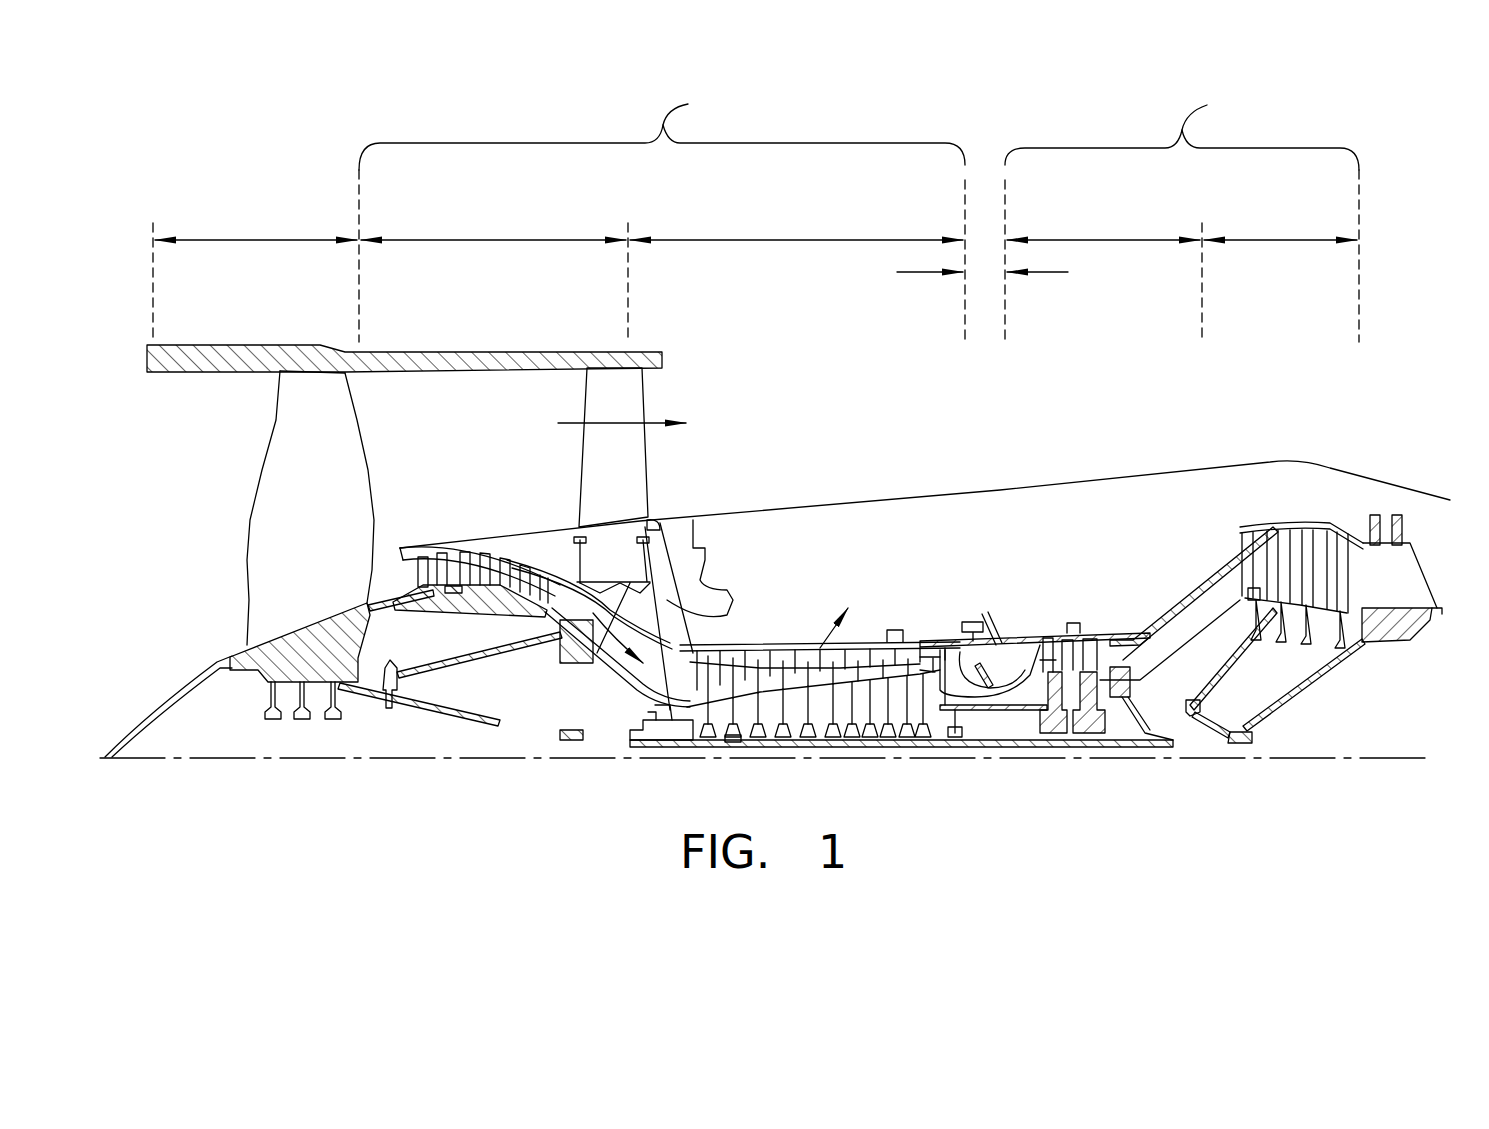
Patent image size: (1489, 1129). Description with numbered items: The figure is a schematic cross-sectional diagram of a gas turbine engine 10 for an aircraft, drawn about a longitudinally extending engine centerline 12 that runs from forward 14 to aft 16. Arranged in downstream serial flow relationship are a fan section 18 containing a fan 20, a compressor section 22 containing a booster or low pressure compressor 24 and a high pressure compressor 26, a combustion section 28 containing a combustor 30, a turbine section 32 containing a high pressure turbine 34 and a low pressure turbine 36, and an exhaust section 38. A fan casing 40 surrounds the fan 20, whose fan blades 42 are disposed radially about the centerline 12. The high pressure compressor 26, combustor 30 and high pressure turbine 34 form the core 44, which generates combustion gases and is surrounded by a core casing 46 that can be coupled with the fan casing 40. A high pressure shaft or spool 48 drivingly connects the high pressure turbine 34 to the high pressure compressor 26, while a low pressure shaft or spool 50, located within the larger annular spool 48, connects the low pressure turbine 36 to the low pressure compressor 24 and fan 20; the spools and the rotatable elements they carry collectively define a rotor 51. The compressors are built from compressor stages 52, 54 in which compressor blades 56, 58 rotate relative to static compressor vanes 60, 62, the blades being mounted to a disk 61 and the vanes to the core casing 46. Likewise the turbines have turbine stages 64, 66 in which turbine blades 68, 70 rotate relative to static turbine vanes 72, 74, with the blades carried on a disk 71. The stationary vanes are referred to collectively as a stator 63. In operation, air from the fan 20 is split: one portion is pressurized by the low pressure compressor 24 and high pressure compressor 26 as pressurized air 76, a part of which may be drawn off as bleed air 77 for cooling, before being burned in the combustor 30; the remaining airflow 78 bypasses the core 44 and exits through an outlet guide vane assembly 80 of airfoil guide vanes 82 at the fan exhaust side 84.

The gas turbine engine 10 is at (1378, 268).
The engine centerline 12 is at (233, 762).
The forward 14 is at (187, 480).
The aft 16 is at (1464, 577).
The fan section 18 is at (256, 240).
The fan 20 is at (228, 604).
The compressor section 22 is at (662, 129).
The low pressure compressor 24 is at (497, 240).
The high pressure compressor 26 is at (802, 240).
The combustion section 28 is at (897, 272).
The combustor 30 is at (1007, 653).
The turbine section 32 is at (1182, 129).
The high pressure turbine 34 is at (1103, 240).
The low pressure turbine 36 is at (1282, 240).
The exhaust section 38 is at (1430, 548).
The fan casing 40 is at (393, 351).
The fan blades 42 is at (324, 420).
The core 44 is at (928, 526).
The core casing 46 is at (1183, 567).
The HP shaft or spool 48 is at (967, 714).
The LP shaft or spool 50 is at (560, 746).
The rotor 51 is at (828, 752).
The compressor stages 52 is at (478, 495).
The compressor stages 54 is at (797, 640).
The compressor blades 56 is at (438, 556).
The compressor blades 58 is at (712, 660).
The static compressor vanes 60 is at (416, 550).
The disk 61 is at (455, 594).
The stator 63 is at (693, 708).
The static compressor vanes 62 is at (697, 644).
The turbine stages 64 is at (1010, 583).
The turbine stages 66 is at (1283, 463).
The turbine blades 68 is at (1068, 640).
The turbine blades 70 is at (1347, 527).
The disk 71 is at (1073, 700).
The static turbine vanes 72 is at (1050, 643).
The static turbine vanes 74 is at (1327, 530).
The pressurized air 76 is at (593, 655).
The bleed air 77 is at (812, 600).
The airflow 78 is at (572, 422).
The outlet guide vane assembly 80 is at (658, 482).
The airfoil guide vanes 82 is at (590, 458).
The fan exhaust side 84 is at (666, 396).